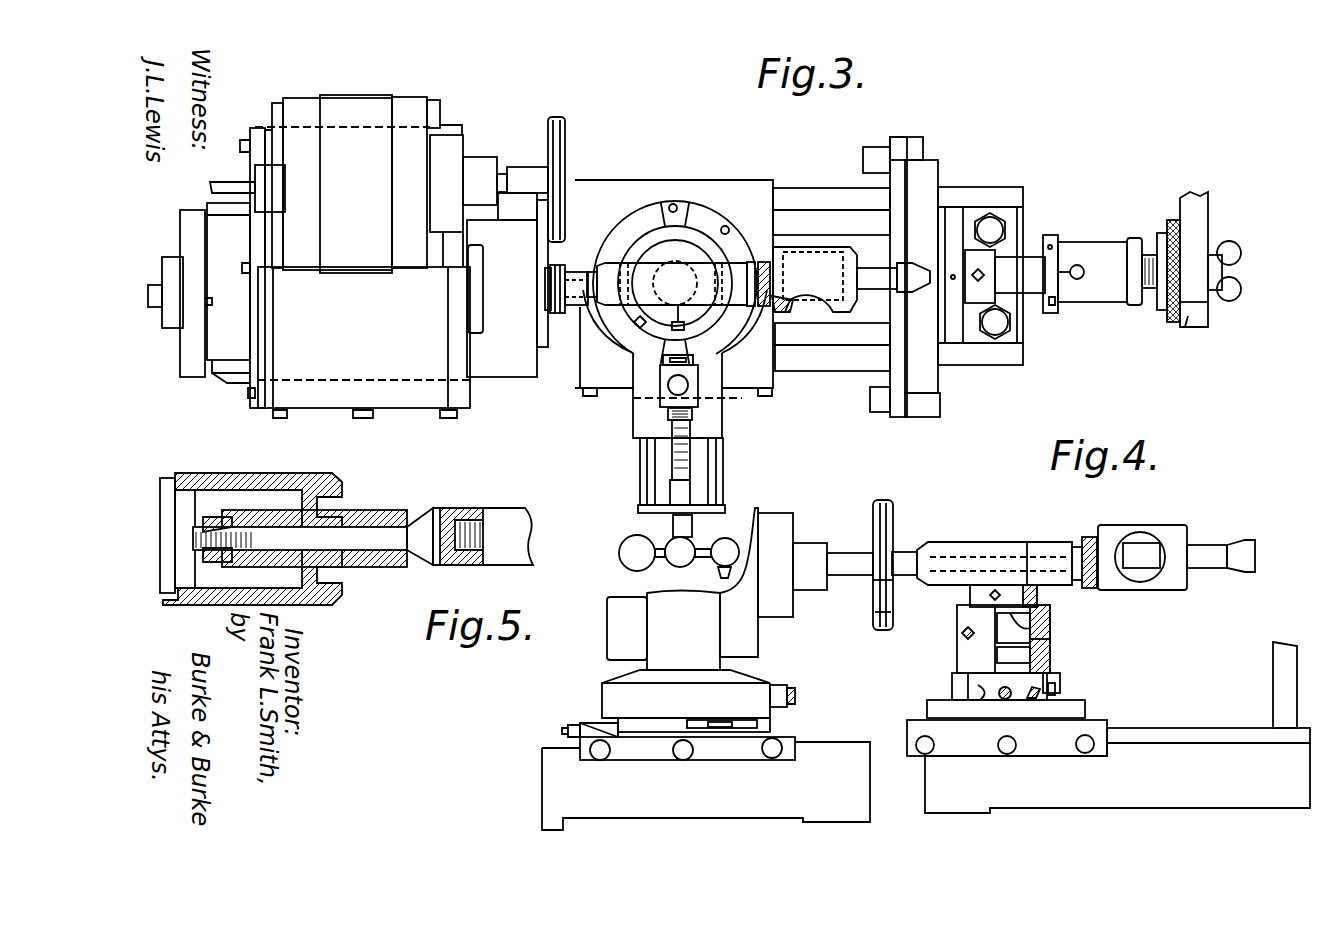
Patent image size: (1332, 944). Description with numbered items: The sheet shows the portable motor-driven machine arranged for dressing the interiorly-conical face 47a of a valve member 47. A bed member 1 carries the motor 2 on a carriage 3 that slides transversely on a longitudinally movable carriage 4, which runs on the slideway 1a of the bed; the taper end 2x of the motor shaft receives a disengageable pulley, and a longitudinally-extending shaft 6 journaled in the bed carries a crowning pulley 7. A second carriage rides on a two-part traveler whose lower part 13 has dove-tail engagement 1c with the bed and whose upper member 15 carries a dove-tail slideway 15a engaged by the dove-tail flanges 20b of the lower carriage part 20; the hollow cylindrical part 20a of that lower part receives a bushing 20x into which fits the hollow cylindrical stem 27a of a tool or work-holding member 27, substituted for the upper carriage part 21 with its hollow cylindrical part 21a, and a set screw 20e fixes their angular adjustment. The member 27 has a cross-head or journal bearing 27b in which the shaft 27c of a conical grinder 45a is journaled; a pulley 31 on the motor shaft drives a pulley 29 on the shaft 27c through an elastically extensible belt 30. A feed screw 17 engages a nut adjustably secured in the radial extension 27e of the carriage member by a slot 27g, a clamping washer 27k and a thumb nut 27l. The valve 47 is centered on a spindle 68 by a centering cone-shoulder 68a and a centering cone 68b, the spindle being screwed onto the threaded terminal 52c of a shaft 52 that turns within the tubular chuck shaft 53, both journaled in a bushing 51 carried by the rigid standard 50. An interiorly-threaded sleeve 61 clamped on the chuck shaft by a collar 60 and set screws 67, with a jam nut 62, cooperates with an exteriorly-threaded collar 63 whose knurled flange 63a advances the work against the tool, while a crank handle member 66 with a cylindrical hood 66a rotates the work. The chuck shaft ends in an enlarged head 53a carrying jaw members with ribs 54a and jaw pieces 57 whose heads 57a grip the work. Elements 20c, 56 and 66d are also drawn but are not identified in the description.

In FIG. 3, the bed member 1 is at (237, 334).
In FIG. 4, the bed member 1 is at (926, 786).
In FIG. 3, the slideway 1a is at (227, 388).
In FIG. 4, the slideway 1a is at (550, 754).
In FIG. 3, the dove-tail engagement 1c is at (830, 182).
In FIG. 4, the dove-tail engagement 1c is at (1200, 742).
In FIG. 3, the motor 2 is at (353, 94).
In FIG. 4, the motor 2 is at (740, 589).
In FIG. 3, the taper end of the motor shaft 2x is at (228, 196).
In FIG. 3, the carriage 3 is at (440, 112).
In FIG. 4, the carriage 3 is at (608, 712).
In FIG. 3, the longitudinally movable carriage 4 is at (388, 344).
In FIG. 4, the longitudinally movable carriage 4 is at (648, 760).
In FIG. 3, the shaft 6 is at (157, 307).
In FIG. 3, the pulley 7 is at (190, 372).
In FIG. 3, the lower part of traveler 13 is at (776, 373).
In FIG. 4, the lower part of traveler 13 is at (908, 730).
In FIG. 3, the upper member of traveler 15 is at (626, 326).
In FIG. 4, the upper member of traveler 15 is at (1076, 708).
In FIG. 3, the dove-tail slideway 15a is at (648, 222).
In FIG. 4, the dove-tail slideway 15a is at (985, 700).
In FIG. 3, the feed screw 17 is at (692, 472).
In FIG. 4, the feed screw 17 is at (1001, 689).
In FIG. 3, the lower part of second carriage 20 is at (636, 246).
In FIG. 4, the lower part of second carriage 20 is at (1060, 677).
In FIG. 4, the hollow cylindrical part 20a is at (1050, 646).
In FIG. 4, the dove-tail flanges 20b is at (966, 694).
In FIG. 4, the head bolt 20c is at (962, 637).
In FIG. 3, the set screw 20e is at (638, 328).
In FIG. 3, the bushing 20x is at (655, 248).
In FIG. 4, the bushing 20x is at (1050, 630).
In FIG. 3, the upper part of second carriage 21 is at (620, 402).
In FIG. 4, the hollow cylindrical part 21a is at (1037, 600).
In FIG. 4, the tool or work-holding member 27 is at (1002, 570).
In FIG. 3, the hollow cylindrical stem 27a is at (684, 258).
In FIG. 4, the hollow cylindrical stem 27a is at (1048, 620).
In FIG. 3, the cross-head or journal bearing 27b is at (693, 310).
In FIG. 4, the cross-head or journal bearing 27b is at (1042, 545).
In FIG. 3, the shaft 27c is at (590, 302).
In FIG. 4, the shaft 27c is at (914, 546).
In FIG. 3, the radial extension 27e is at (646, 418).
In FIG. 3, the slot 27g is at (700, 416).
In FIG. 3, the clamping washer 27k is at (697, 394).
In FIG. 3, the thumb nut 27l is at (668, 386).
In FIG. 3, the pulley 29 is at (550, 312).
In FIG. 4, the pulley 29 is at (880, 581).
In FIG. 3, the belt 30 is at (548, 261).
In FIG. 4, the belt 30 is at (882, 614).
In FIG. 3, the pulley 31 is at (565, 146).
In FIG. 4, the pulley 31 is at (875, 518).
In FIG. 3, the conical grinder 45a is at (763, 262).
In FIG. 4, the conical grinder 45a is at (1090, 538).
In FIG. 3, the valve member 47 is at (823, 299).
In FIG. 4, the valve member 47 is at (1165, 530).
In FIG. 5, the valve member 47 is at (316, 472).
In FIG. 3, the interiorly-conical face 47a is at (775, 312).
In FIG. 5, the interiorly-conical face 47a is at (160, 490).
In FIG. 3, the rigid standard 50 is at (956, 330).
In FIG. 4, the rigid standard 50 is at (1282, 706).
In FIG. 3, the bushing 51 is at (990, 230).
In FIG. 5, the shaft 52 is at (498, 510).
In FIG. 5, the threaded terminal 52c is at (462, 566).
In FIG. 3, the tubular shaft or sleeve 53 is at (995, 322).
In FIG. 3, the enlarged head 53a is at (938, 178).
In FIG. 3, the rib 54a is at (924, 150).
In FIG. 3, the clamp block 56 is at (985, 276).
In FIG. 3, the jaw pieces 57 is at (897, 356).
In FIG. 3, the heads of jaw pieces 57a is at (874, 150).
In FIG. 3, the collar 60 is at (1052, 241).
In FIG. 3, the interiorly-threaded sleeve 61 is at (1092, 250).
In FIG. 3, the jam nut 62 is at (1160, 238).
In FIG. 3, the exteriorly-threaded collar 63 is at (1147, 277).
In FIG. 3, the knurled flange 63a is at (1170, 322).
In FIG. 3, the crank handle member 66 is at (1195, 204).
In FIG. 3, the cylindrical hood 66a is at (1192, 326).
In FIG. 3, the wing nut 66d is at (1222, 300).
In FIG. 3, the set screw 67 is at (1053, 306).
In FIG. 5, the spindle 68 is at (368, 535).
In FIG. 3, the centering cone-shoulder 68a is at (903, 266).
In FIG. 4, the centering cone-shoulder 68a is at (1242, 572).
In FIG. 5, the centering cone-shoulder 68a is at (414, 516).
In FIG. 4, the centering cone 68b is at (1135, 568).
In FIG. 5, the centering cone 68b is at (214, 518).